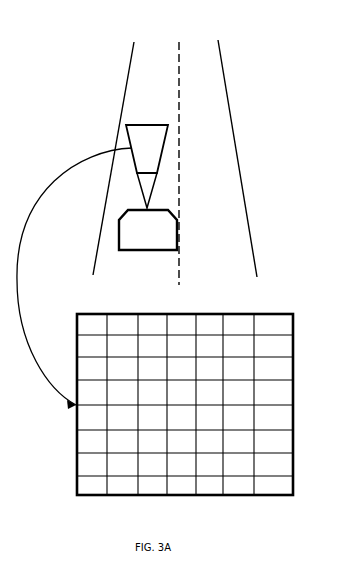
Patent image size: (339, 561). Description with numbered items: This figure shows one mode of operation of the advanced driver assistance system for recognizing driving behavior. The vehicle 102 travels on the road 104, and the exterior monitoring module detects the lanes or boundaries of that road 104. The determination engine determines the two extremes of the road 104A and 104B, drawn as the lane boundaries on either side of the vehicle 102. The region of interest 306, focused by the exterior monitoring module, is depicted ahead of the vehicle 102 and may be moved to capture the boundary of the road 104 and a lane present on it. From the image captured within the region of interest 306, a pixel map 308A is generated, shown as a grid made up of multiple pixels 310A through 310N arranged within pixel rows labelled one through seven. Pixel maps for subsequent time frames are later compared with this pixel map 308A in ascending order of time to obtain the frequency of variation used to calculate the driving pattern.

The vehicle 102 is at (118, 233).
The road 104 is at (156, 151).
The extreme of the road 104A is at (128, 70).
The extreme of the road 104B is at (178, 42).
The region of interest 306 is at (164, 148).
The pixel map 308A is at (168, 335).
The pixel 310A is at (86, 484).
The pixel 310N is at (262, 320).